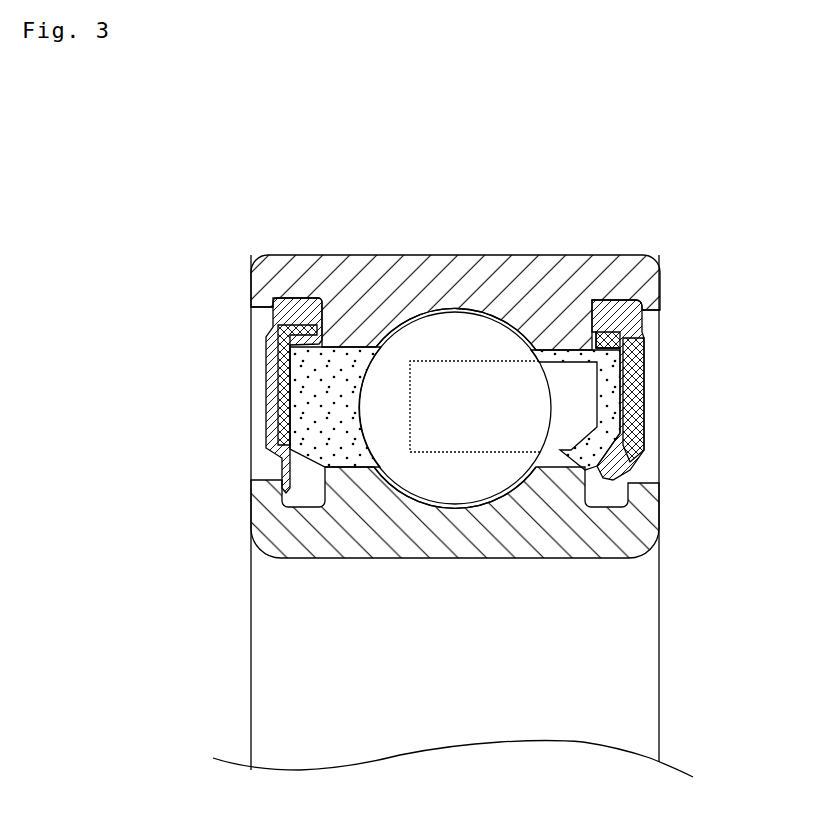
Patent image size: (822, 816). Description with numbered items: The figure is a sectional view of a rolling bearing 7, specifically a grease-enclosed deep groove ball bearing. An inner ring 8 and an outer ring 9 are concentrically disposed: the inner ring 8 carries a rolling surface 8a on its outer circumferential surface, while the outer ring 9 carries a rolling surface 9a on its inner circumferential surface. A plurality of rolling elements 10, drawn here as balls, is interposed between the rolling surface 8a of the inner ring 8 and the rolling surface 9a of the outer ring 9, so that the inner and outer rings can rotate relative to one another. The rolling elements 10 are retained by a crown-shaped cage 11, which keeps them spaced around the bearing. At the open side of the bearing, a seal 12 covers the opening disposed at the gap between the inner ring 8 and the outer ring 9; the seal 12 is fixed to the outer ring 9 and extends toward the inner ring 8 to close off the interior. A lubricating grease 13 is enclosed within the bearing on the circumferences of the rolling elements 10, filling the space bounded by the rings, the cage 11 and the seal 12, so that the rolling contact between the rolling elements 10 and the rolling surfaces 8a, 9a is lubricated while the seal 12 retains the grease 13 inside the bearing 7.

The rolling bearing 7 is at (454, 404).
The inner ring 8 is at (605, 530).
The rolling surface of the inner ring 8a is at (462, 492).
The outer ring 9 is at (558, 283).
The rolling surface of the outer ring 9a is at (461, 328).
The rolling elements 10 is at (413, 342).
The crown-shaped cage 11 is at (577, 427).
The seal 12 is at (270, 369).
The lubricating grease 13 is at (305, 407).